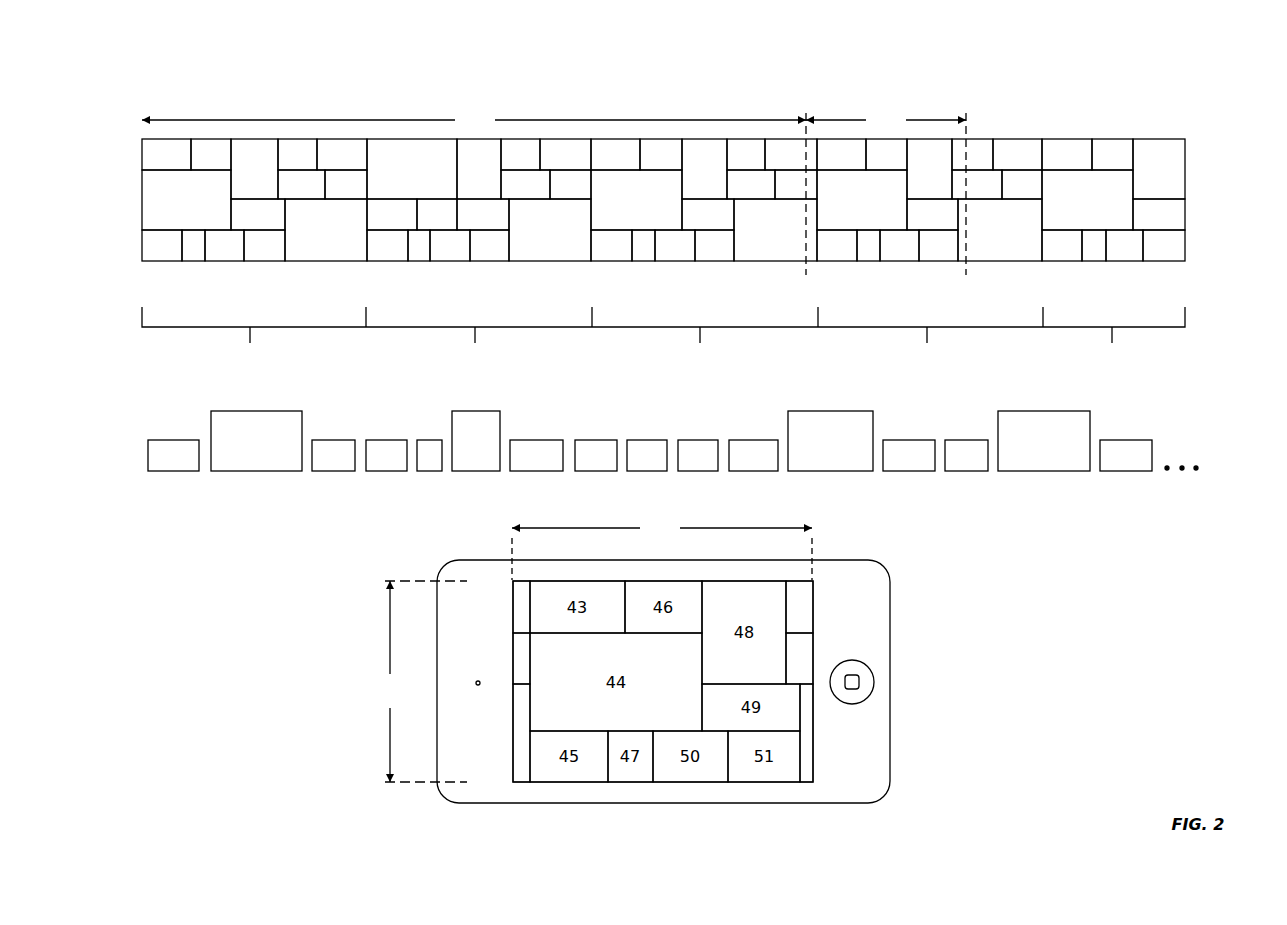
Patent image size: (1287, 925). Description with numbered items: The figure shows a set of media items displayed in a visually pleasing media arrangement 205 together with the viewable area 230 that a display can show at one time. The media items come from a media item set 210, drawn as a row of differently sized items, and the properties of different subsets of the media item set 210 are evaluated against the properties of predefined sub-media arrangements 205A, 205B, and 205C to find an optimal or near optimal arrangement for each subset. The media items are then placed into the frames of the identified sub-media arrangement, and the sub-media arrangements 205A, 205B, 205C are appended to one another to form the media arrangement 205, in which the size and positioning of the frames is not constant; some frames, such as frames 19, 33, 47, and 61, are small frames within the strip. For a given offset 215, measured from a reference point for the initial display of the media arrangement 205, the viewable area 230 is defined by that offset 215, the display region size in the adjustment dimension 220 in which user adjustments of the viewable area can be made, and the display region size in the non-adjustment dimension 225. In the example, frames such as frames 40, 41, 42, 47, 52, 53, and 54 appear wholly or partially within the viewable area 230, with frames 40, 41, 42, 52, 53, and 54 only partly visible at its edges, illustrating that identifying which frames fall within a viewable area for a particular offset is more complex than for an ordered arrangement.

The media arrangement 205 is at (645, 78).
The sub-media arrangement 205A is at (587, 346).
The sub-media arrangement 205B is at (473, 346).
The sub-media arrangement 205C is at (1119, 346).
The media item set 210 is at (138, 448).
The offset 215 is at (474, 119).
The display region size in the adjustment dimension 220 is at (739, 344).
The display region size in the non-adjustment dimension 225 is at (419, 681).
The viewable area 230 is at (772, 800).
The blank tile 19 is at (422, 256).
The blank tile 33 is at (643, 256).
The media frame 47 is at (870, 256).
The blank tile 61 is at (1095, 256).
The media frame 40 is at (520, 722).
The media frame 41 is at (520, 618).
The media frame 42 is at (520, 664).
The media frame 52 is at (808, 602).
The media frame 53 is at (808, 657).
The media frame 54 is at (808, 730).